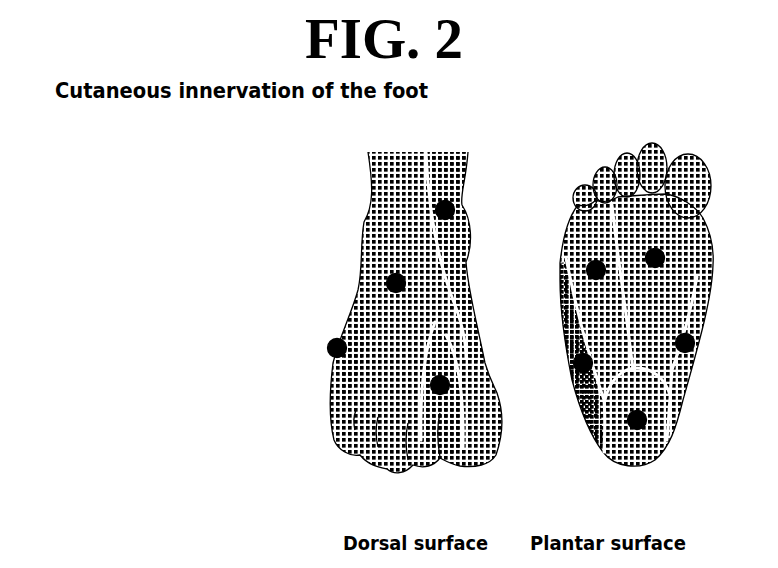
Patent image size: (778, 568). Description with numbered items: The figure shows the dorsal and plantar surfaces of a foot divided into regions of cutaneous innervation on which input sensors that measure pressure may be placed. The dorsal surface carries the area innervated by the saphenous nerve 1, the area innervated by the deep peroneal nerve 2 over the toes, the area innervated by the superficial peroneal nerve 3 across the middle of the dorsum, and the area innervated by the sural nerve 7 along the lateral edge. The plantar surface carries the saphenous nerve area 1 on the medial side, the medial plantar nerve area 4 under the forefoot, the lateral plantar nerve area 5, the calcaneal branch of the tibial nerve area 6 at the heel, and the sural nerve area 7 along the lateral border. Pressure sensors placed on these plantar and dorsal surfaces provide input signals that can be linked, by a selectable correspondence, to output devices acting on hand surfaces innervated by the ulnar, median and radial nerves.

The saphenous nerve surface 1 is at (375, 242).
The deep peroneal nerve surface 2 is at (267, 282).
The superficial peroneal nerve surface 3 is at (243, 267).
The medial plantar nerve surface 4 is at (375, 307).
The lateral plantar nerve surface 5 is at (345, 348).
The calcaneal branch surface 6 is at (351, 458).
The sural nerve surface 7 is at (355, 441).